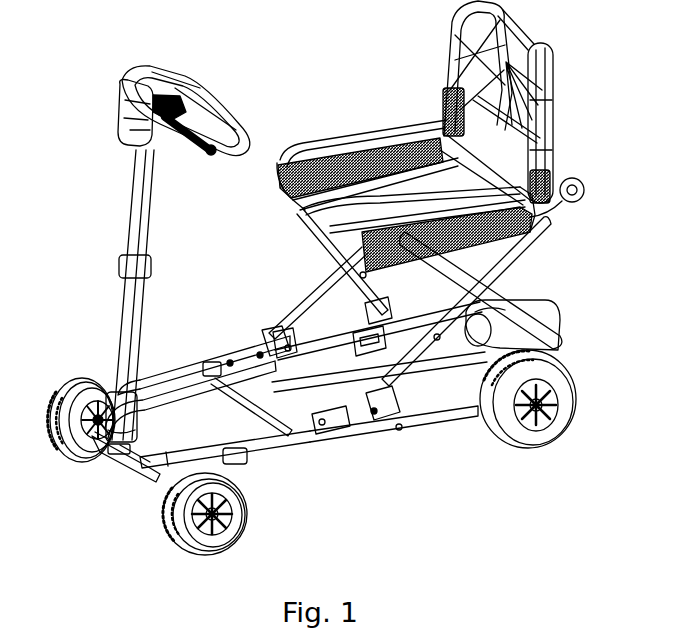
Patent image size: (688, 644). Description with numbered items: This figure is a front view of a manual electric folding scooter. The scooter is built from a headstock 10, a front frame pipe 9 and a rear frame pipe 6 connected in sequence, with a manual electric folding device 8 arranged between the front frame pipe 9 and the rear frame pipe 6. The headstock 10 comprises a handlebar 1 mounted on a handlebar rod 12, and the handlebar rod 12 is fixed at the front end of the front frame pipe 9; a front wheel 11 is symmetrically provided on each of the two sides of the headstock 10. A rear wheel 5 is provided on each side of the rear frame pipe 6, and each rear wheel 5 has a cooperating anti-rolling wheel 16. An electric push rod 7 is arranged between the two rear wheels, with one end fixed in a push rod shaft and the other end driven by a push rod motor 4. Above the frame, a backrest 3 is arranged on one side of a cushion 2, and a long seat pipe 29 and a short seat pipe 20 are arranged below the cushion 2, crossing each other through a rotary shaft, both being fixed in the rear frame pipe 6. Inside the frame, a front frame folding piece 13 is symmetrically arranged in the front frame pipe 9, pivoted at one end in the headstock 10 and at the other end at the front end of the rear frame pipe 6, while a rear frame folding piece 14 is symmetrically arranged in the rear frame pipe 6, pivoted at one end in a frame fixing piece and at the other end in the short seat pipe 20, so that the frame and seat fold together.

The handlebar 1 is at (122, 80).
The cushion 2 is at (365, 157).
The backrest 3 is at (497, 72).
The push rod motor 4 is at (482, 322).
The rear wheel 5 is at (572, 412).
The rear frame pipe 6 is at (439, 419).
The electric push rod 7 is at (377, 368).
The manual electric folding device 8 is at (322, 420).
The front frame pipe 9 is at (247, 462).
The headstock 10 is at (107, 460).
The front wheel 11 is at (62, 387).
The handlebar rod 12 is at (112, 326).
The front frame folding piece 13 is at (183, 394).
The rear frame folding piece 14 is at (333, 322).
The anti-rolling wheel 16 is at (563, 180).
The short seat pipe 20 is at (483, 288).
The long seat pipe 29 is at (507, 263).